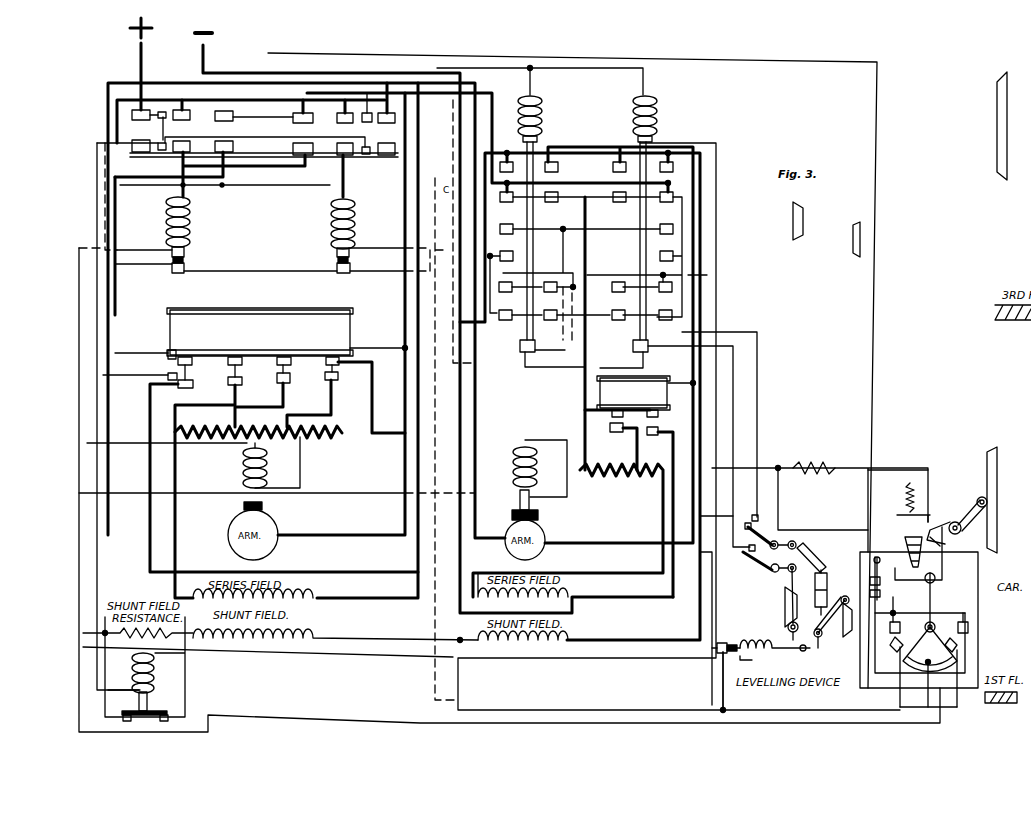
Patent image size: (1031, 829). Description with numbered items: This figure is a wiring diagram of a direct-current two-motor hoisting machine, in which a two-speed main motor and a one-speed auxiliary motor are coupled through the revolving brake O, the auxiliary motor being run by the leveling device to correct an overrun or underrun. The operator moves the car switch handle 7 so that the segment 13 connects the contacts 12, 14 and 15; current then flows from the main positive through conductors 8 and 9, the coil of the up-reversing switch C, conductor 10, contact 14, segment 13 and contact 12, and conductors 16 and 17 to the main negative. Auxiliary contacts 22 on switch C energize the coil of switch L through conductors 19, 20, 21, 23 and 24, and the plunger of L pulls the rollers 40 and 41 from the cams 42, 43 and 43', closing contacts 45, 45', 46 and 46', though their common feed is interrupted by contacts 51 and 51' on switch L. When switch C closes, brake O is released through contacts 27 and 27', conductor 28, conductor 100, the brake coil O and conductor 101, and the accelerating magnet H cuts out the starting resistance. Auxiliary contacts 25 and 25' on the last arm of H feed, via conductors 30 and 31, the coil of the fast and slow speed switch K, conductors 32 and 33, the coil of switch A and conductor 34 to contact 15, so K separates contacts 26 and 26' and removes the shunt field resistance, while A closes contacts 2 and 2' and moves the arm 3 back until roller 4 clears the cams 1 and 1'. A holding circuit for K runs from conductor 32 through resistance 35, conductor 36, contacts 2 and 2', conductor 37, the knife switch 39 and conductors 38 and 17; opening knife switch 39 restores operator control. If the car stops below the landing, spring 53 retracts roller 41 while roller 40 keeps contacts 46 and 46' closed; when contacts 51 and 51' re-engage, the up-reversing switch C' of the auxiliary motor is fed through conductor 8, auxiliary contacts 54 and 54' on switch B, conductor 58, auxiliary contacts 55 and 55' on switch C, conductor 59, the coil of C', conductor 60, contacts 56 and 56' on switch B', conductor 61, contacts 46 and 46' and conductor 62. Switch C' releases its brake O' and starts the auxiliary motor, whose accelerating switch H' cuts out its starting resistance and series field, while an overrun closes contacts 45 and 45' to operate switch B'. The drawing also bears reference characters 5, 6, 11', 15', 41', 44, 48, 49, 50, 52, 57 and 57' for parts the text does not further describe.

The cam 1 is at (1001, 500).
The cam 1' is at (1011, 126).
The contact on switch A 2 is at (949, 539).
The contact on switch A 2' is at (907, 520).
The arm 3 is at (965, 515).
The roller 4 is at (980, 497).
The lever 5 is at (950, 522).
The spring 6 is at (913, 497).
The car switch handle 7 is at (936, 584).
The conductor 8 is at (105, 168).
The conductor 9 is at (152, 186).
The conductor 10 is at (356, 249).
The contact 11' is at (374, 146).
The contact 12 is at (916, 660).
The segment 13 is at (95, 205).
The contact 14 is at (897, 650).
The contact 15 is at (887, 626).
The contact 15' is at (984, 627).
The conductor 16 is at (928, 677).
The conductor 17 is at (560, 710).
The conductor 19 is at (371, 92).
The conductor 20 is at (283, 134).
The conductor 21 is at (344, 53).
The auxiliary contact on switch C 22 is at (371, 114).
The conductor 23 is at (749, 663).
The conductor 24 is at (723, 680).
The auxiliary contact on switch H 25 is at (157, 362).
The auxiliary contact on switch H 25' is at (185, 372).
The contact on switch K 26 is at (117, 723).
The contact on switch K 26' is at (155, 723).
The contact on switch C 27 is at (392, 125).
The contact on switch C 27' is at (393, 148).
The conductor 28 is at (270, 160).
The conductor 30 is at (150, 353).
The conductor 31 is at (135, 377).
The conductor 32 is at (222, 648).
The conductor 33 is at (779, 498).
The conductor 34 is at (888, 599).
The resistance 35 is at (812, 466).
The conductor 36 is at (880, 470).
The conductor 37 is at (943, 567).
The conductor 38 is at (920, 606).
The knife switch 39 is at (881, 587).
The roller 40 is at (845, 596).
The roller 41 is at (793, 633).
The vane 41' is at (849, 252).
The cam 42 is at (846, 640).
The cam 43 is at (782, 607).
The cam 43' is at (786, 237).
The pivot 44 is at (820, 644).
The contact on leveling device 45 is at (762, 545).
The contact on leveling device 45' is at (749, 569).
The contact on leveling device 46 is at (750, 543).
The contact on leveling device 46' is at (793, 508).
The link 48 is at (775, 535).
The link 49 is at (788, 572).
The pivot 50 is at (796, 545).
The contact on switch L 51 is at (730, 636).
The contact on switch L 51' is at (708, 664).
The link 52 is at (830, 619).
The spring 53 is at (818, 575).
The auxiliary contact on switch B 54 is at (163, 252).
The auxiliary contact on switch B 54' is at (149, 278).
The auxiliary contact on switch C 55 is at (352, 257).
The auxiliary contact on switch C 55' is at (383, 279).
The contact on switch B' 56 is at (517, 346).
The contact on switch B' 56' is at (534, 357).
The contact 57 is at (628, 346).
The contact 57' is at (675, 445).
The conductor 58 is at (232, 274).
The conductor 59 is at (432, 224).
The conductor 60 is at (692, 144).
The conductor 61 is at (606, 326).
The conductor 62 is at (720, 516).
The conductor 100 is at (130, 436).
The conductor 101 is at (319, 492).
The reversing switch B is at (168, 204).
The up-reversing switch C is at (354, 210).
The reversing switch for auxiliary motor B' is at (535, 218).
The up-reversing switch for auxiliary motor C' is at (648, 218).
The accelerating magnet H is at (260, 336).
The accelerating switch H' is at (646, 396).
The revolving brake O is at (271, 462).
The brake O' is at (539, 480).
The fast and slow speed switch K is at (154, 672).
The switch of the leveling device L is at (750, 645).
The switch A is at (905, 542).